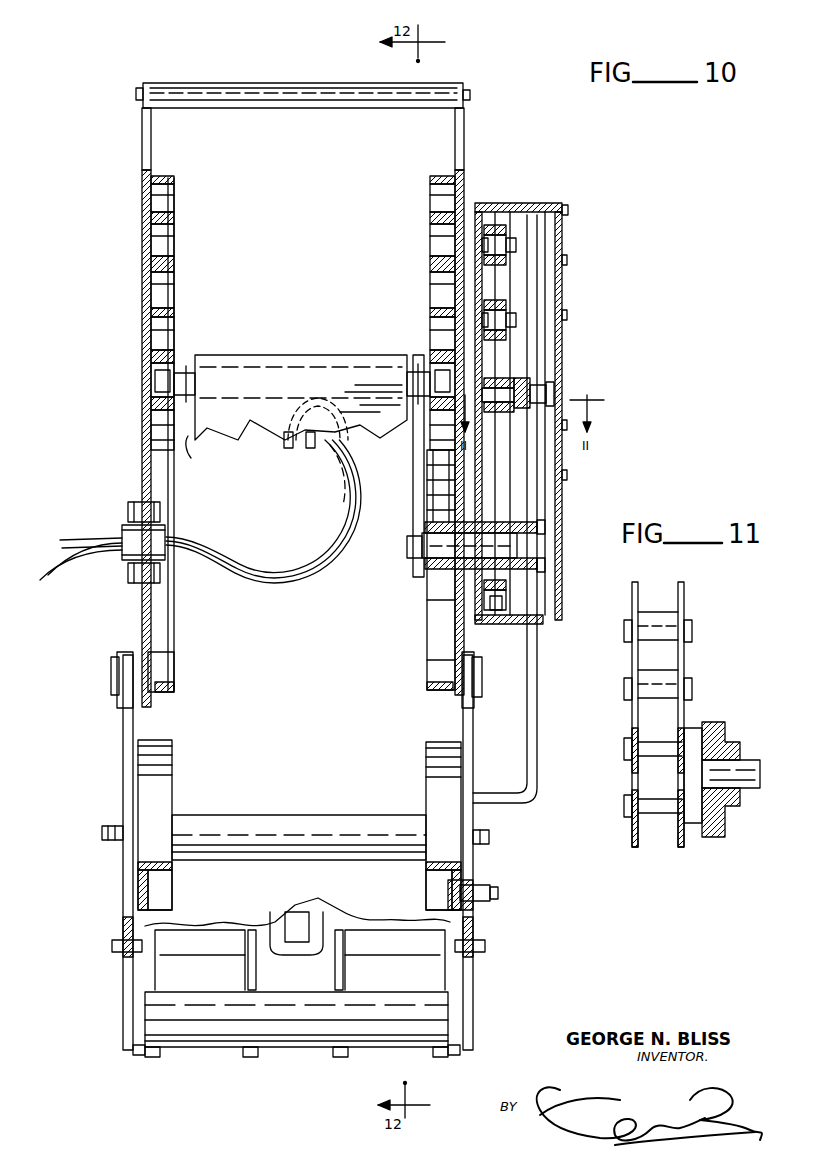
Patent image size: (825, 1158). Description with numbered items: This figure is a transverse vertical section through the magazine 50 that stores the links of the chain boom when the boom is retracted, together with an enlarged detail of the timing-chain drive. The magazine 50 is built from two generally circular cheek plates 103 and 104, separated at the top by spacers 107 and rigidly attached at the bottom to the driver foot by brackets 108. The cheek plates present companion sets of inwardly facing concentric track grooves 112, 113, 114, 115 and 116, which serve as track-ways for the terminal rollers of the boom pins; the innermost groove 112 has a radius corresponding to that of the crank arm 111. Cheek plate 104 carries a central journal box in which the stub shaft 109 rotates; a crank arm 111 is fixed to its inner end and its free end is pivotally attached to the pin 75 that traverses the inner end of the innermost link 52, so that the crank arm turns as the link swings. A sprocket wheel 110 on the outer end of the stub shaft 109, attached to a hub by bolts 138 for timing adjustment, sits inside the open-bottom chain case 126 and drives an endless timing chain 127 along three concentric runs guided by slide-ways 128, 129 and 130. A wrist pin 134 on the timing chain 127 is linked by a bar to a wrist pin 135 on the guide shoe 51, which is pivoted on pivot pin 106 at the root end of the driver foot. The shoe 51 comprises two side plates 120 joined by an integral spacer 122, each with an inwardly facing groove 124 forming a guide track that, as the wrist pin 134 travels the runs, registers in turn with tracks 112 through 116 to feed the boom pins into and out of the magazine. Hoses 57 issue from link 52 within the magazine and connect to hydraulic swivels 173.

In FIG. 10, the magazine 50 is at (140, 458).
In FIG. 10, the guide shoe 51 is at (322, 1052).
In FIG. 10, the innermost link 52 is at (280, 431).
In FIG. 10, the hoses 57 is at (324, 534).
In FIG. 10, the pin 75 is at (198, 453).
In FIG. 10, the cheek plate 103 is at (142, 122).
In FIG. 10, the cheek plate 104 is at (464, 130).
In FIG. 10, the pivot pin 106 is at (103, 832).
In FIG. 10, the spacers 107 is at (280, 92).
In FIG. 10, the brackets 108 is at (123, 989).
In FIG. 10, the stub shaft 109 is at (438, 544).
In FIG. 10, the sprocket wheel 110 is at (506, 611).
In FIG. 10, the crank arm 111 is at (413, 486).
In FIG. 10, the track groove 112 is at (155, 384).
In FIG. 10, the track groove 113 is at (162, 333).
In FIG. 10, the track groove 114 is at (162, 292).
In FIG. 10, the track groove 115 is at (162, 240).
In FIG. 10, the track groove 116 is at (162, 198).
In FIG. 10, the side plates 120 is at (137, 1047).
In FIG. 10, the spacer 122 is at (218, 1034).
In FIG. 10, the grooves 124 is at (163, 887).
In FIG. 10, the chain case 126 is at (562, 359).
In FIG. 10, the timing chain 127 is at (533, 627).
In FIG. 11, the timing chain 127 is at (684, 593).
In FIG. 10, the slide-way 128 is at (496, 234).
In FIG. 10, the slide-way 129 is at (500, 319).
In FIG. 10, the slide-way 130 is at (496, 384).
In FIG. 10, the wrist pin 134 is at (546, 389).
In FIG. 11, the wrist pin 134 is at (752, 789).
In FIG. 10, the wrist pin 135 is at (488, 903).
In FIG. 10, the bolts 138 is at (538, 697).
In FIG. 11, the bolts 138 is at (732, 721).
In FIG. 10, the hydraulic swivels 173 is at (132, 560).